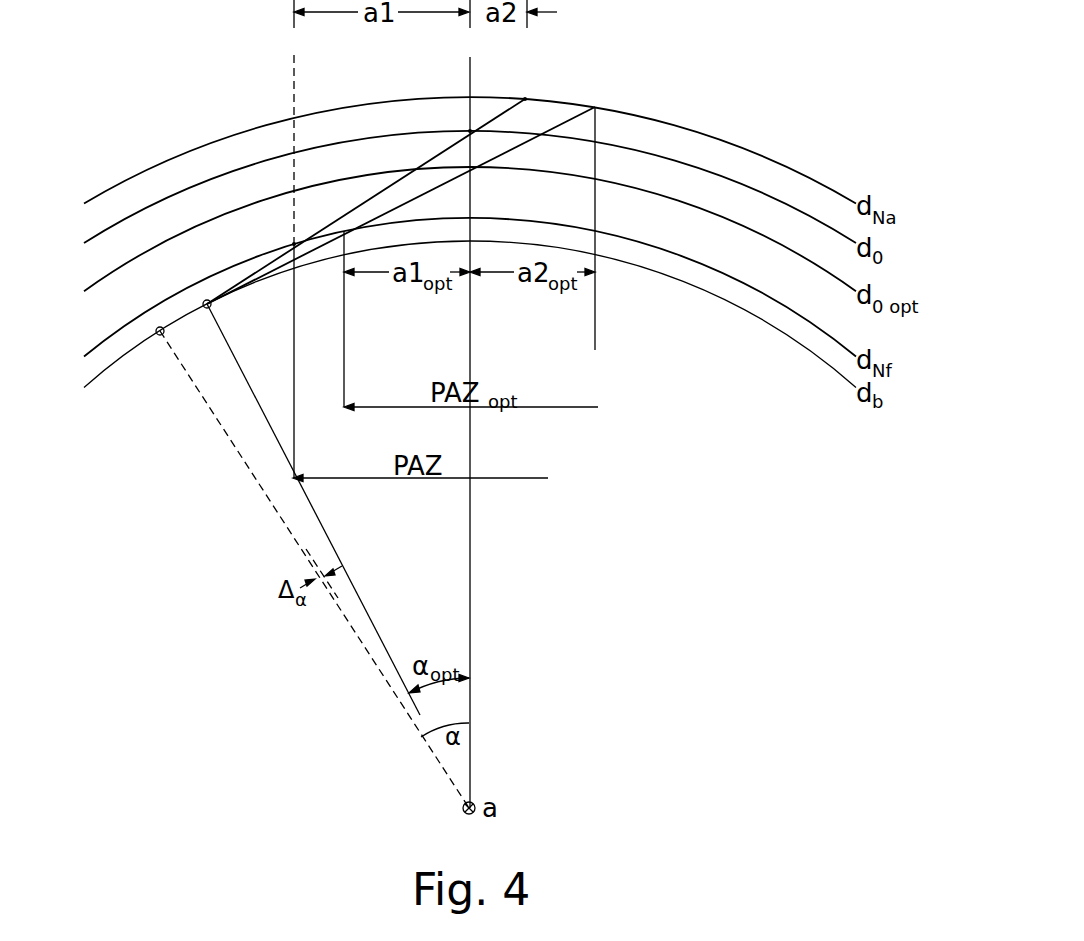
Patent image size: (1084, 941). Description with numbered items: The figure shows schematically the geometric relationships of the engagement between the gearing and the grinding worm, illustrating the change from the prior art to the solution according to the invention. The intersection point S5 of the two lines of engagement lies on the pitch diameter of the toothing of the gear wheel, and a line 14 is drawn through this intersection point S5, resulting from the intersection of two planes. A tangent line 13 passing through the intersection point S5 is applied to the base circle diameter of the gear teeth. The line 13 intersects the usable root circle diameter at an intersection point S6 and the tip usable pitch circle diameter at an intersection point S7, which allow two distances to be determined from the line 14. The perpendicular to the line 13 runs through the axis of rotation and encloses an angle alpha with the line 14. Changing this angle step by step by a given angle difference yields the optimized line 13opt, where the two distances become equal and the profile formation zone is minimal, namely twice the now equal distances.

The tangent line 13 is at (221, 280).
The optimized tangent line 13opt is at (380, 213).
The line 14 is at (470, 288).
The intersection point S5 is at (471, 131).
The intersection point S6 is at (293, 243).
The intersection point S7 is at (525, 97).